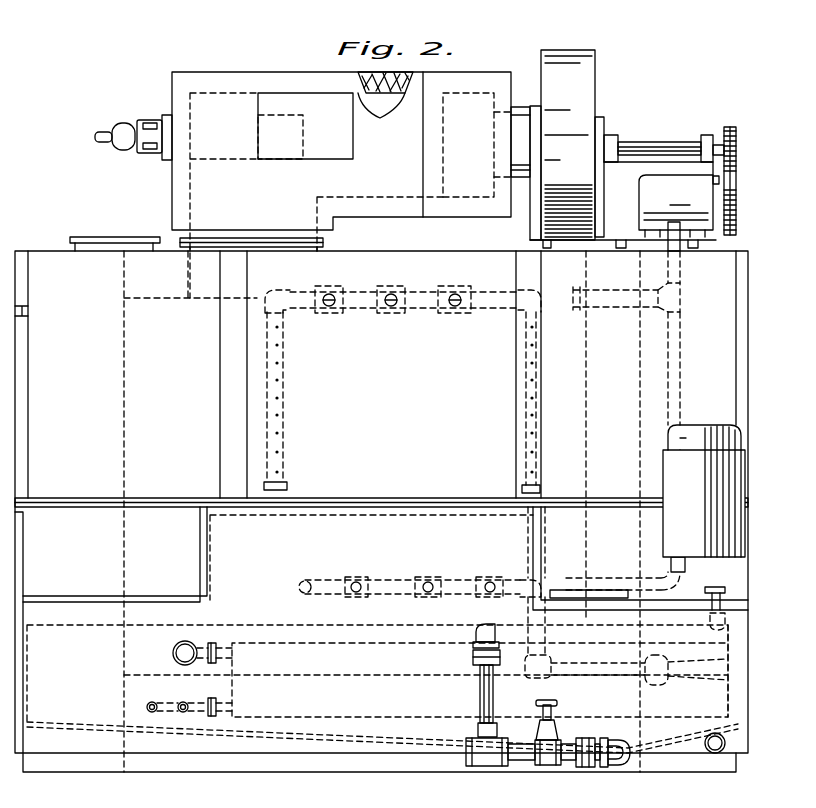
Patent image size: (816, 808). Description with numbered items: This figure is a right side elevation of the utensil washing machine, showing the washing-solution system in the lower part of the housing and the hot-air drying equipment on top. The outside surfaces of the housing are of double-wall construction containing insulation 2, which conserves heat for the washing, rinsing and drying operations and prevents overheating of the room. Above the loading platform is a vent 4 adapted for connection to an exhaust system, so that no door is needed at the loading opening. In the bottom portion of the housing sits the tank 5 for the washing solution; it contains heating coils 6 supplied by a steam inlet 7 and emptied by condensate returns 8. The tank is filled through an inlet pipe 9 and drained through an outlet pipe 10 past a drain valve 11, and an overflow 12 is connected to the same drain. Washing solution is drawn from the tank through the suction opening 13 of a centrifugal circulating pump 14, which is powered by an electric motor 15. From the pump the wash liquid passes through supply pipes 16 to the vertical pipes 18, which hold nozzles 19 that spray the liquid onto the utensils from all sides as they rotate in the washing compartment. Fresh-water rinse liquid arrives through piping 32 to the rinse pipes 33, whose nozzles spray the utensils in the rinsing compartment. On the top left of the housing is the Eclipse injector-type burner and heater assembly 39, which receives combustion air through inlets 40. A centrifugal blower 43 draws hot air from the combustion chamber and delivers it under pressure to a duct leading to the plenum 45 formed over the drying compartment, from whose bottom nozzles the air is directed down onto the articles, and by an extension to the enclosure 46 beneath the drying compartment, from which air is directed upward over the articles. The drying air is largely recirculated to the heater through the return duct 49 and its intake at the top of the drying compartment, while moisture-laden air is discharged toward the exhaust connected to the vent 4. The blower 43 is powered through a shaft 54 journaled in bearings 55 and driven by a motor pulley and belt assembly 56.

The insulation 2 is at (400, 72).
The vent 4 is at (106, 240).
The tank 5 is at (380, 730).
The heating coils 6 is at (340, 690).
The steam inlet 7 is at (196, 644).
The condensate returns 8 is at (152, 713).
The inlet pipe 9 is at (726, 592).
The outlet pipe 10 is at (620, 766).
The drain valve 11 is at (550, 748).
The overflow 12 is at (486, 630).
The suction opening 13 is at (678, 684).
The circulating pump 14 is at (718, 670).
The electric motor 15 is at (700, 462).
The supply pipes 16 is at (411, 310).
The vertical pipes 18 is at (530, 400).
The nozzles 19 is at (281, 362).
The piping 32 is at (676, 266).
The pipes 33 is at (603, 306).
The burner and heater assembly 39 is at (169, 45).
The inlets 40 is at (168, 118).
The centrifugal blower 43 is at (590, 103).
The plenum 45 is at (417, 278).
The enclosure 46 is at (165, 655).
The return duct 49 is at (279, 278).
The shaft 54 is at (656, 143).
The bearings 55 is at (703, 138).
The motor pulley and belt assembly 56 is at (744, 176).